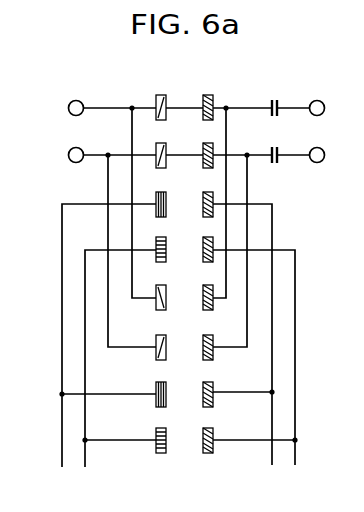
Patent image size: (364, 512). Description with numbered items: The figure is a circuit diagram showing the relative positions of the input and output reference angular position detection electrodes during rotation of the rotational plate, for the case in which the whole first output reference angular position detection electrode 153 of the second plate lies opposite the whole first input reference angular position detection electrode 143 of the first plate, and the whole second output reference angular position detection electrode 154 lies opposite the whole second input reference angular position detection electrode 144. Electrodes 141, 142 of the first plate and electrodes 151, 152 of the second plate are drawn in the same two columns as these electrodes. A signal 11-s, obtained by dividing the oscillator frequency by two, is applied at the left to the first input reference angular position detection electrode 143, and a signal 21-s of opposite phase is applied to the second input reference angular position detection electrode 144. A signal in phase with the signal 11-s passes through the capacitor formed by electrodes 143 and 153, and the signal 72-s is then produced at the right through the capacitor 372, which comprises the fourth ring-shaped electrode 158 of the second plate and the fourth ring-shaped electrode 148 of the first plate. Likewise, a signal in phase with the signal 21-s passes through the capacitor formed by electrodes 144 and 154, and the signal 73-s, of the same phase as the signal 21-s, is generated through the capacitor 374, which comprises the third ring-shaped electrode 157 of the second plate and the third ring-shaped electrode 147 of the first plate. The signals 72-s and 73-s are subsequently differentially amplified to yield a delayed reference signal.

The signal 11-s is at (68, 99).
The signal 21-s is at (68, 147).
The signal 72-s is at (310, 101).
The signal 73-s is at (324, 162).
The electrode of the first plate 141 is at (156, 194).
The electrode of the first plate 142 is at (167, 222).
The first input reference angular position detection electrode 143 is at (162, 95).
The second input reference angular position detection electrode 144 is at (170, 128).
The electrode of the second plate 151 is at (202, 193).
The electrode of the second plate 152 is at (203, 241).
The first output reference angular position detection electrode 153 is at (208, 95).
The second output reference angular position detection electrode 154 is at (204, 168).
The capacitor 372 is at (272, 99).
The capacitor 374 is at (272, 148).
The fourth ring-shaped electrode 158 is at (271, 105).
The fourth ring-shaped electrode 148 is at (278, 113).
The third ring-shaped electrode 157 is at (271, 162).
The third ring-shaped electrode 147 is at (279, 162).